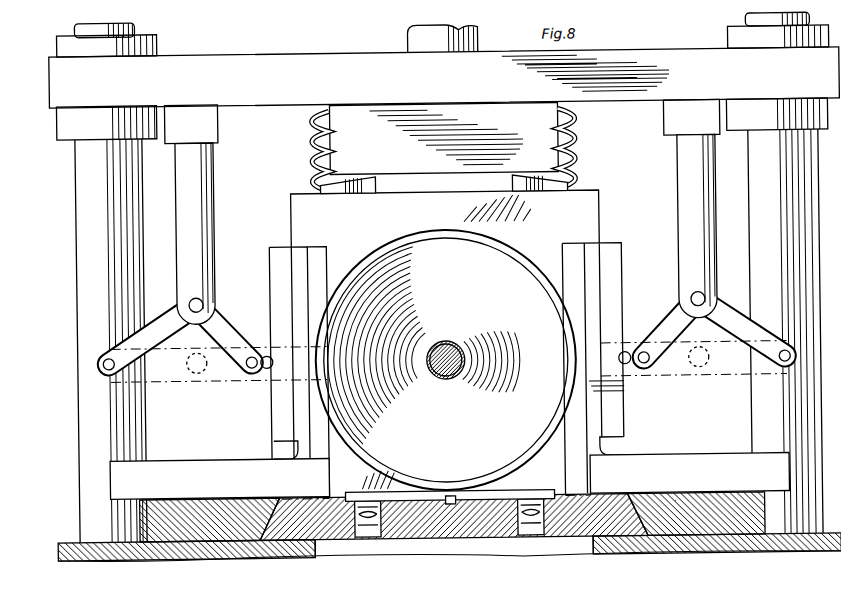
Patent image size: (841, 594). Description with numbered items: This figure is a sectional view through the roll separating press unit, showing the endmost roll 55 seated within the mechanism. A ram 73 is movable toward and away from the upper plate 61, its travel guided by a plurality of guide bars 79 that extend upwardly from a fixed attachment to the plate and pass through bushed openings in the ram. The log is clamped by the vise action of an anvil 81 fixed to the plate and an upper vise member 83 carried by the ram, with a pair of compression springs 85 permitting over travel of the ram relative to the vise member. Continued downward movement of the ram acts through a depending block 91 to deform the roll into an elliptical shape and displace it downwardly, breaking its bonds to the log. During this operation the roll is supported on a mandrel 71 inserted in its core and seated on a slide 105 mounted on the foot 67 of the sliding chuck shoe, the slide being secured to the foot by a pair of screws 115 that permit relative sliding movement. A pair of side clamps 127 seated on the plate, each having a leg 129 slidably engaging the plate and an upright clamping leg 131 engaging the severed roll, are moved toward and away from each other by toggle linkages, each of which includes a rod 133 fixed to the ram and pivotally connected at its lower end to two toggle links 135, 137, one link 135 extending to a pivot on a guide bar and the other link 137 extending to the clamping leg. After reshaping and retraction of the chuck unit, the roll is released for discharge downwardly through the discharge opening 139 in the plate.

The endmost roll 55 is at (462, 306).
The upper plate 61 is at (220, 545).
The foot 67 is at (409, 527).
The mandrel 71 is at (456, 372).
The ram 73 is at (289, 70).
The guide bars 79 is at (77, 293).
The anvil 81 is at (507, 480).
The upper vise member 83 is at (572, 226).
The compression springs 85 is at (312, 139).
The depending block 91 is at (430, 123).
The slide 105 is at (524, 492).
The screws 115 is at (362, 534).
The side clamps 127 is at (272, 441).
The leg 129 is at (197, 470).
The clamping leg 131 is at (270, 275).
The rod 133 is at (213, 206).
The toggle link 135 is at (160, 325).
The toggle link 137 is at (225, 322).
The roll discharge opening 139 is at (452, 548).